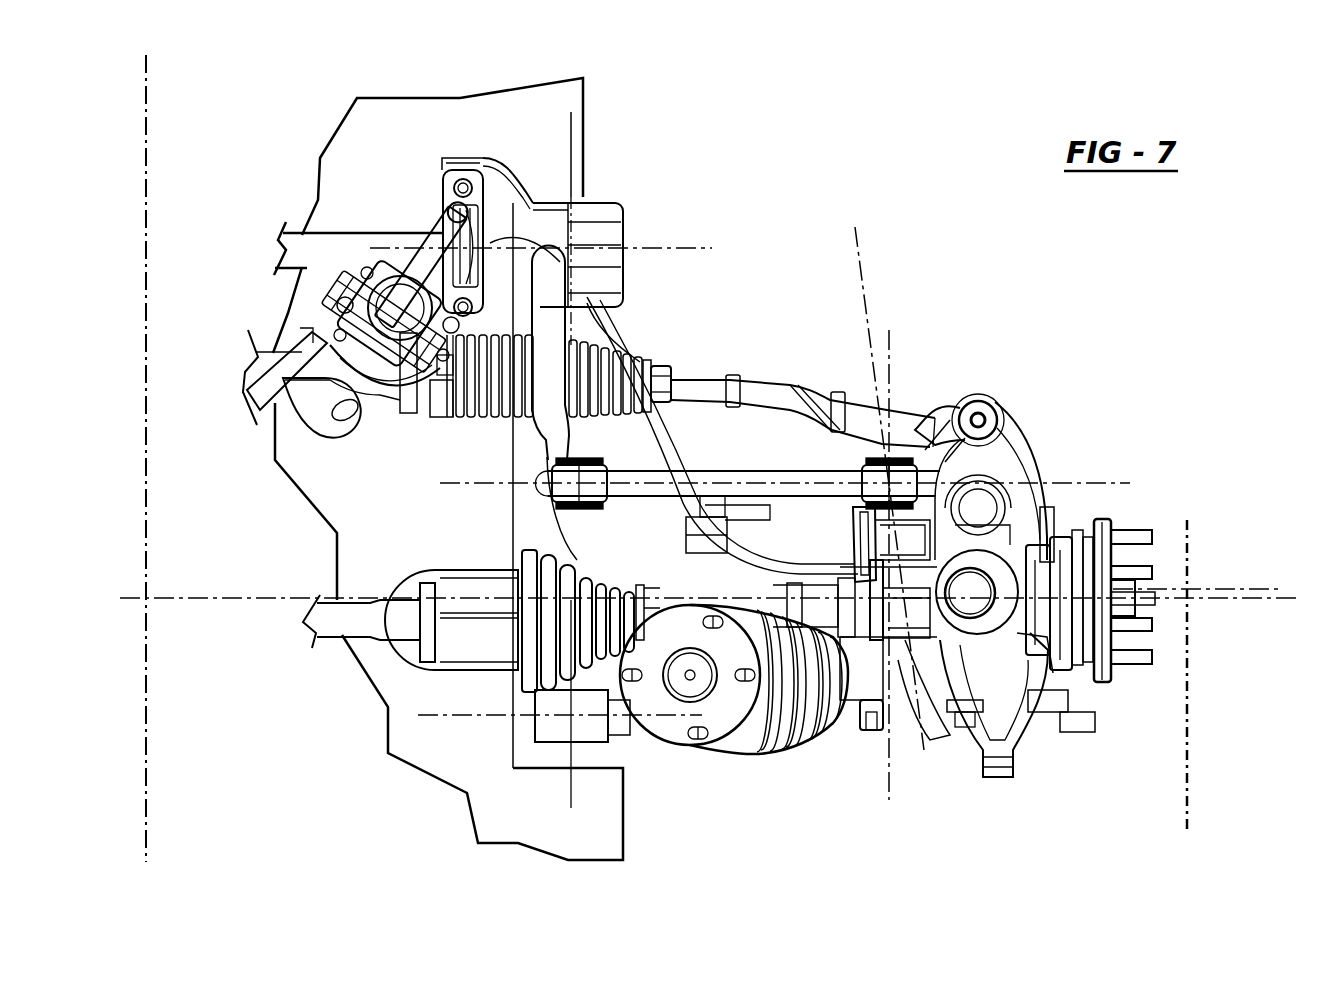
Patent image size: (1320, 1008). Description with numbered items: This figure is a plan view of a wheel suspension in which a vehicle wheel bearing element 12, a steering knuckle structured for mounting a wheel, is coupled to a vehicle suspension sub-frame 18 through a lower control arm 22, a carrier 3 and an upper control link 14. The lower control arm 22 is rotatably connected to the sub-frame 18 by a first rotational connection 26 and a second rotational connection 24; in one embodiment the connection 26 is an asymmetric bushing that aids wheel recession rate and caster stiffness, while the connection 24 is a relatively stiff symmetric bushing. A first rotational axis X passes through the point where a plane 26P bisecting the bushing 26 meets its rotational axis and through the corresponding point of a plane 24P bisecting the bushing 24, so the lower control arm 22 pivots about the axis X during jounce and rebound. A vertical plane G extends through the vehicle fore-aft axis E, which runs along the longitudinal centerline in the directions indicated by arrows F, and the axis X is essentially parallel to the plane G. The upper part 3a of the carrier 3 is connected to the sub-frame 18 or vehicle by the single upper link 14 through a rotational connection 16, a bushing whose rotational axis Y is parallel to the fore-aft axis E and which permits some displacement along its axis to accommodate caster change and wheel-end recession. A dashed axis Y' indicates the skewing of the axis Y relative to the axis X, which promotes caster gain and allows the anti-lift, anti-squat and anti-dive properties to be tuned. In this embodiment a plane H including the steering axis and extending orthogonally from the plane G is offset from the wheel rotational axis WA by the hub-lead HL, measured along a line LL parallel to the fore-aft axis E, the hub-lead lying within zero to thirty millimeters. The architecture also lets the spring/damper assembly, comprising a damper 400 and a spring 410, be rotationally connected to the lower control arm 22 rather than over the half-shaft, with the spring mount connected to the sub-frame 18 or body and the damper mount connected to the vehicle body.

The vertical plane G is at (146, 147).
The vehicle fore-aft axis E is at (146, 836).
The first rotational axis X is at (572, 130).
The arrows F is at (723, 54).
The first rotational connection 26 is at (607, 230).
The plane bisecting the bushing 26 26P is at (710, 248).
The dashed axis Y' is at (894, 486).
The rotational axis of the bushing Y is at (927, 536).
The lower control arm 22 is at (645, 440).
The rotational connection 16 is at (935, 468).
The carrier 3 is at (927, 587).
The upper part of the carrier 3a is at (990, 623).
The upper control link 14 is at (808, 477).
The vehicle wheel bearing element 12 is at (1110, 527).
The wheel rotational axis WA is at (1200, 589).
The hub-lead HL is at (1270, 628).
The plane including the steering axis H is at (1205, 599).
The line LL is at (1188, 745).
The second rotational connection 24 is at (547, 725).
The plane bisecting the bushing 24 24P is at (453, 717).
The vehicle suspension sub-frame 18 is at (568, 835).
The damper 400 is at (770, 728).
The spring 410 is at (769, 679).